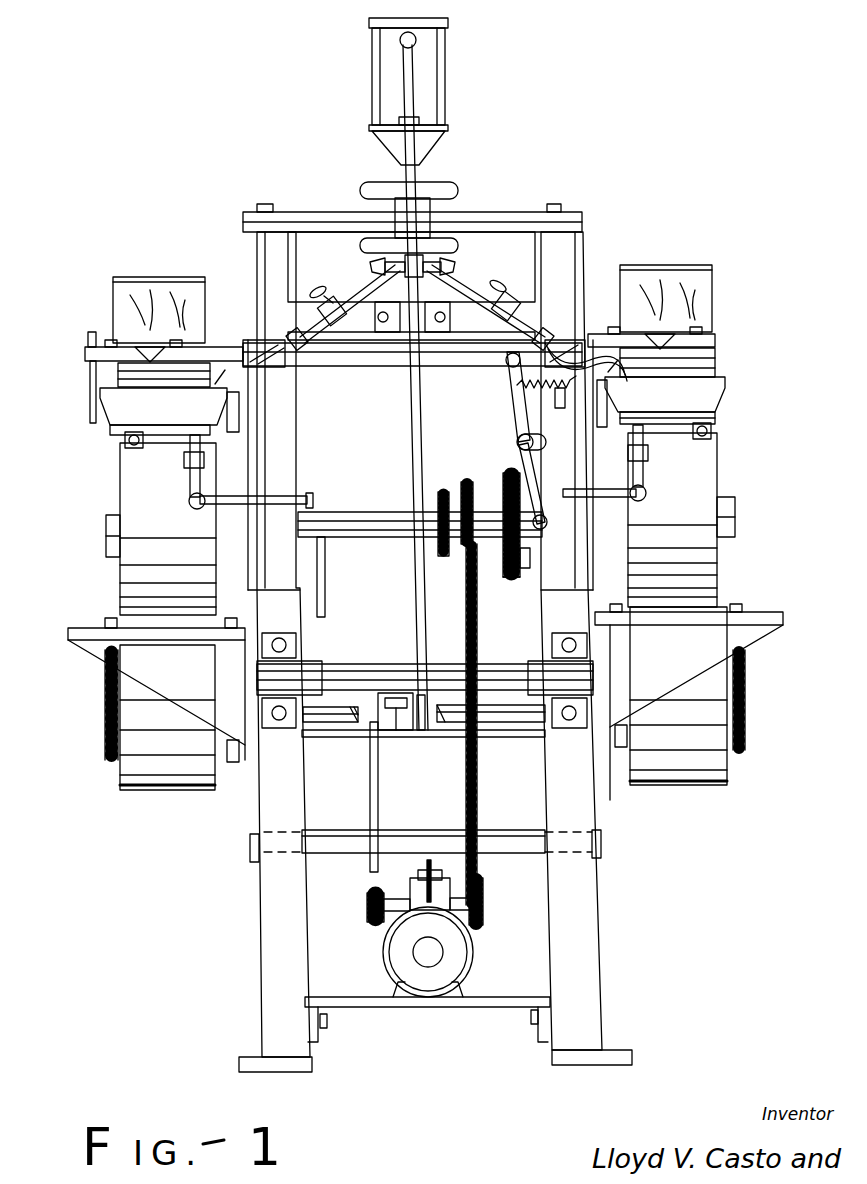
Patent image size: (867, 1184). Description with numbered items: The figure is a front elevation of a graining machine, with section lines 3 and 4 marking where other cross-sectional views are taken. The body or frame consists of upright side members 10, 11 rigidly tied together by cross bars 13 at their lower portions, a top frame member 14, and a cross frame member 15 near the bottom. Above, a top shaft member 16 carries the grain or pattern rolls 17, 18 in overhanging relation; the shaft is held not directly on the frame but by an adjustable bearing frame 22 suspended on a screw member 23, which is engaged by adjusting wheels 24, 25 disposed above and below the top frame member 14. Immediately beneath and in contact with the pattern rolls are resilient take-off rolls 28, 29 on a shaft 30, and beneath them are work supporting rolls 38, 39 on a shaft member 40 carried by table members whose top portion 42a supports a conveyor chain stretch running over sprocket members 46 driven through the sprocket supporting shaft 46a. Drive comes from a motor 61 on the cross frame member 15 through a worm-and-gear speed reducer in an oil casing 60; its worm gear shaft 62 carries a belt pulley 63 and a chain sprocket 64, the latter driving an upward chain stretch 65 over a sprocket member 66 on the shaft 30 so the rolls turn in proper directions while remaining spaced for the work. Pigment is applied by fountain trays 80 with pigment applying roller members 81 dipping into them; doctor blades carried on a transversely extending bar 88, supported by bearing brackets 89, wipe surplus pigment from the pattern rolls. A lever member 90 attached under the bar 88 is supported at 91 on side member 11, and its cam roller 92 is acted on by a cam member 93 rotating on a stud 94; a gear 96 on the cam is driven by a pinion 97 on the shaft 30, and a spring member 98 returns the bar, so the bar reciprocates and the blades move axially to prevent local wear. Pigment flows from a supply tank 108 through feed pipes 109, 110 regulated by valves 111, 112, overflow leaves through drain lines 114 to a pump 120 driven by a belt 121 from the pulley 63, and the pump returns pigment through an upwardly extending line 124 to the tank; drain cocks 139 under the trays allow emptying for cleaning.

The section line 3— 3 is at (395, 3).
The section line 4— 4 is at (135, 232).
The upright side member 10 is at (275, 930).
The upright side member 11 is at (590, 930).
The cross bar 13 is at (345, 830).
The top frame member 14 is at (300, 226).
The cross frame member 15 is at (357, 1005).
The top shaft member 16 is at (354, 364).
The grain or pattern roll 17 is at (150, 300).
The grain or pattern roll 18 is at (663, 278).
The adjustable bearing frame 22 is at (510, 232).
The screw member 23 is at (420, 276).
The adjusting wheel 24 is at (372, 190).
The adjusting wheel 25 is at (362, 246).
The take-off roll 28 is at (161, 529).
The take-off roll 29 is at (716, 470).
The shaft 30 is at (378, 510).
The work supporting roll 38 is at (150, 795).
The work supporting roll 39 is at (672, 790).
The shaft member 40 is at (320, 722).
The top portion of table member 42a is at (88, 632).
The sprocket member 46 is at (105, 760).
The sprocket supporting shaft 46a is at (395, 667).
The oil casing 60 is at (428, 860).
The motor 61 is at (462, 952).
The worm gear shaft 62 is at (395, 903).
The belt pulley 63 is at (368, 896).
The chain sprocket 64 is at (462, 905).
The chain stretch 65 is at (478, 813).
The sprocket member 66 is at (444, 492).
The fountain tray 80 is at (412, 391).
The pigment applying roller member 81 is at (208, 384).
The transversely extending bar 88 is at (492, 346).
The bearing bracket 89 is at (85, 355).
The lever member 90 is at (514, 422).
The lever support 91 is at (517, 442).
The cam roller 92 is at (542, 528).
The cam member 93 is at (522, 566).
The stud 94 is at (497, 510).
The gear 96 is at (510, 580).
The pinion 97 is at (467, 480).
The spring member 98 is at (552, 392).
The supply tank or reservoir 108 is at (428, 100).
The feed pipe 109 is at (360, 290).
The feed pipe 110 is at (492, 290).
The valve 111 is at (337, 308).
The valve 112 is at (515, 290).
The fountain tray drain line 114 is at (290, 500).
The pump 120 is at (394, 732).
The belt 121 is at (378, 818).
The upwardly extending line 124 is at (416, 436).
The drain cock 139 is at (125, 450).